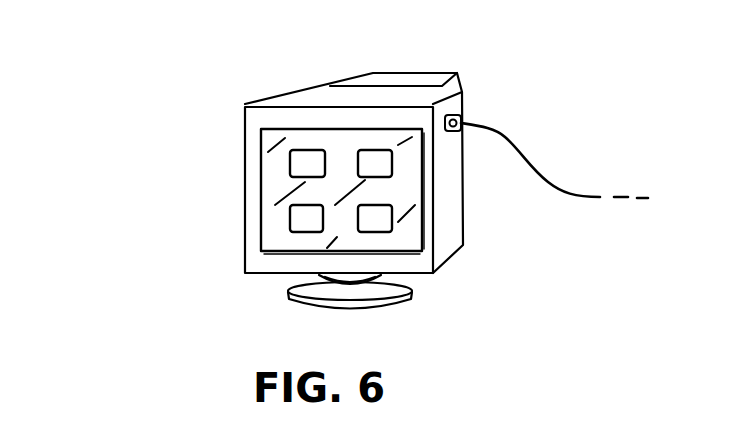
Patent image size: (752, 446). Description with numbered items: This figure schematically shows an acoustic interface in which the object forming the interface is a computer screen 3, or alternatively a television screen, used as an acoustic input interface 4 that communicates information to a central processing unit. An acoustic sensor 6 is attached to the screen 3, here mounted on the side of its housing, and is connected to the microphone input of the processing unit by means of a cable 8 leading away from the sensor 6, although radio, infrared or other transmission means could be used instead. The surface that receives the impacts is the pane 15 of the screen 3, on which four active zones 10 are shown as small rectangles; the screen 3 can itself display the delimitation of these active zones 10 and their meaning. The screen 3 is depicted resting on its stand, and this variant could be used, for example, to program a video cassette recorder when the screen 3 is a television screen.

The computer screen 3 is at (232, 143).
The acoustic input interface 4 is at (392, 313).
The acoustic sensor 6 is at (460, 113).
The cable 8 is at (533, 159).
The active zones 10 is at (373, 163).
The pane 15 is at (402, 235).